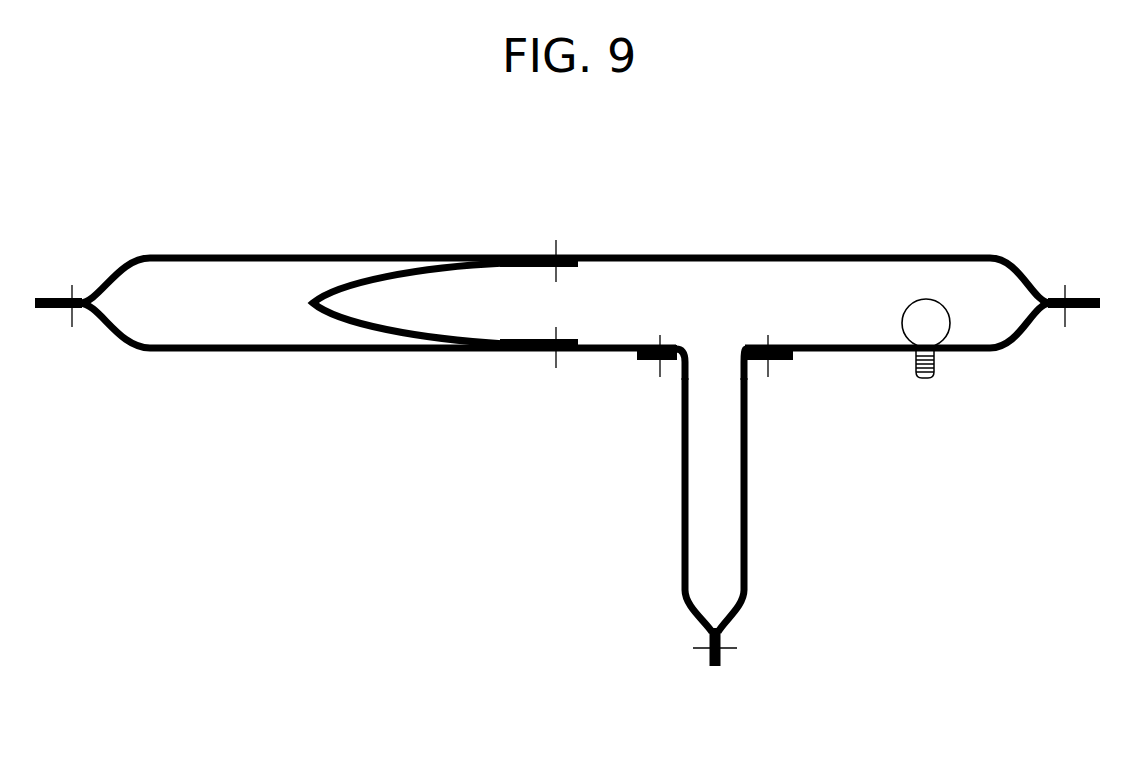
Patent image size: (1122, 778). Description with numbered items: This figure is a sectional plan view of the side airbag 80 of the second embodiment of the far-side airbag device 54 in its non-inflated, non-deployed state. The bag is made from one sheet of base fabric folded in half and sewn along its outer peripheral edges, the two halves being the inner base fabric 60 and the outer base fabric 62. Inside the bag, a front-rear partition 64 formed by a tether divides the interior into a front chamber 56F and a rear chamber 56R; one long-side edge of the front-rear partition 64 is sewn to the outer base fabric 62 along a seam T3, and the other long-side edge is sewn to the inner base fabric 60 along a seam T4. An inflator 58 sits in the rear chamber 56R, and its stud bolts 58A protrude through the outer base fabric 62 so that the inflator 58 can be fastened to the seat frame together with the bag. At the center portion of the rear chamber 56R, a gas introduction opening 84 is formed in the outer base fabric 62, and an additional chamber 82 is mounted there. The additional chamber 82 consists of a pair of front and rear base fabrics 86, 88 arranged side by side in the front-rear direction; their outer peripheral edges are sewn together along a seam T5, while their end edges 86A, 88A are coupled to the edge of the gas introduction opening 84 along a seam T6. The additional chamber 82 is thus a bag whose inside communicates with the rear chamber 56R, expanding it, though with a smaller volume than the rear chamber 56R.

The FS airbag device 54 is at (567, 303).
The side airbag 80 is at (567, 303).
The inflator 58 is at (957, 290).
The inner base fabric 60 is at (342, 255).
The outer base fabric 62 is at (262, 353).
The front-rear partition 64 is at (365, 340).
The front chamber 56F is at (230, 317).
The rear chamber 56R is at (758, 310).
The seam T3 is at (556, 362).
The seam T4 is at (555, 246).
The seam T5 is at (722, 655).
The seam T6 is at (658, 340).
The stud bolt 58A is at (940, 360).
The additional chamber 82 is at (713, 544).
The gas introduction opening 84 is at (722, 378).
The front base fabric 86 is at (637, 490).
The end edge 86A is at (681, 372).
The rear base fabric 88 is at (790, 490).
The end edge 88A is at (748, 370).